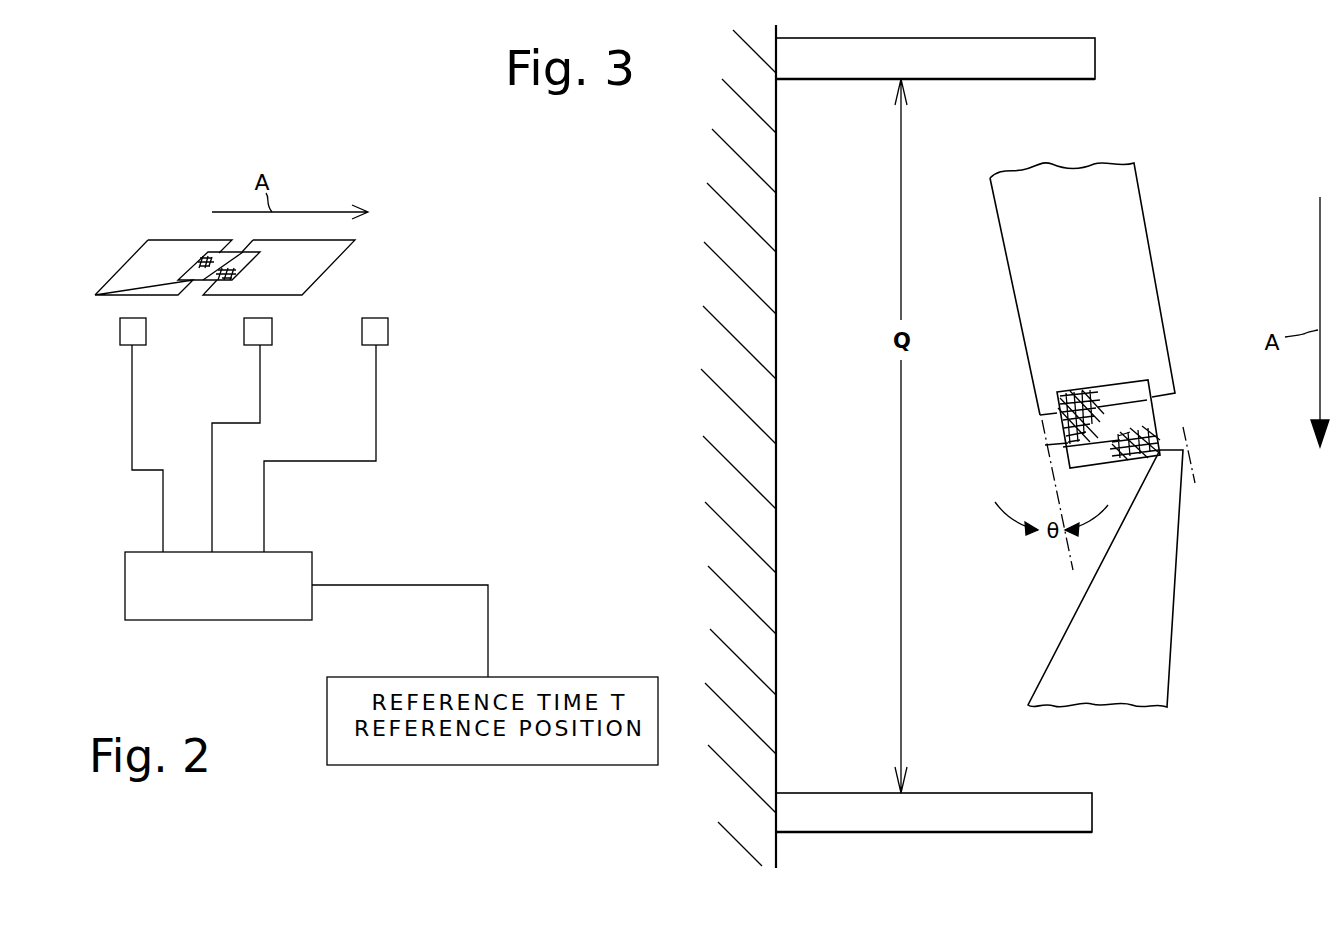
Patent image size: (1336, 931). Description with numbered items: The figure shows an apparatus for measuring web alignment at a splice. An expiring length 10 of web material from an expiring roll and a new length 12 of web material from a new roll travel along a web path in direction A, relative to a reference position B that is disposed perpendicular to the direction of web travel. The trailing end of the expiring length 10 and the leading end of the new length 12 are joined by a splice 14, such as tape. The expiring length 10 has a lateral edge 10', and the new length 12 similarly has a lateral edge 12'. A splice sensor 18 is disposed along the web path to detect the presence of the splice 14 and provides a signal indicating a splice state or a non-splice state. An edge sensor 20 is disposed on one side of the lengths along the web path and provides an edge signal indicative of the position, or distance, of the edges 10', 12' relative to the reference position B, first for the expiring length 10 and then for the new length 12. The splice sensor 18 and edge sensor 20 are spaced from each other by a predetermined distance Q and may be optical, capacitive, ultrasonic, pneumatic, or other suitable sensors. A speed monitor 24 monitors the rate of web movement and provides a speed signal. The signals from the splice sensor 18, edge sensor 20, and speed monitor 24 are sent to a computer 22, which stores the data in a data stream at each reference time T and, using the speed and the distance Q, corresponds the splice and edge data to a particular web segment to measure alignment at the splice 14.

In FIG. 2, the expiring length 10 is at (318, 267).
In FIG. 3, the expiring length 10 is at (1105, 575).
In FIG. 3, the first lateral edge of expiring length 10' is at (991, 620).
In FIG. 2, the new length 12 is at (160, 247).
In FIG. 3, the new length 12 is at (1082, 289).
In FIG. 3, the first lateral edge of new length 12' is at (981, 306).
In FIG. 2, the splice 14 is at (203, 283).
In FIG. 3, the splice 14 is at (1160, 418).
In FIG. 2, the splice sensor 18 is at (124, 337).
In FIG. 3, the splice sensor 18 is at (1090, 58).
In FIG. 2, the edge sensor 20 is at (262, 333).
In FIG. 3, the edge sensor 20 is at (1093, 817).
In FIG. 2, the computer 22 is at (207, 627).
In FIG. 2, the speed monitor 24 is at (380, 332).
In FIG. 3, the reference position B is at (772, 845).